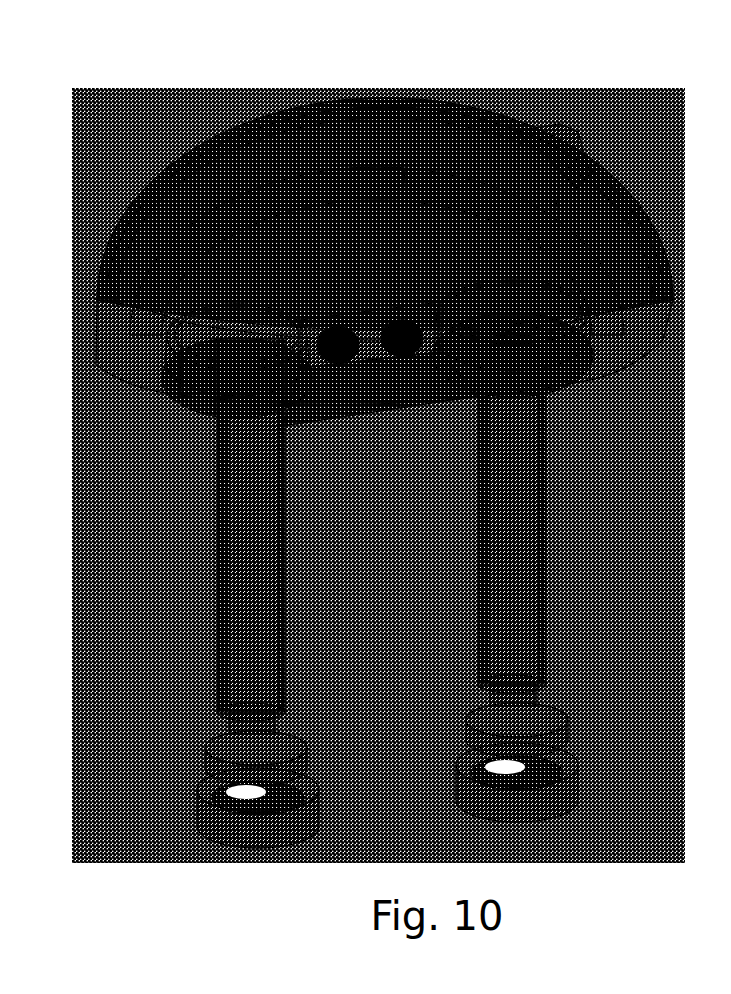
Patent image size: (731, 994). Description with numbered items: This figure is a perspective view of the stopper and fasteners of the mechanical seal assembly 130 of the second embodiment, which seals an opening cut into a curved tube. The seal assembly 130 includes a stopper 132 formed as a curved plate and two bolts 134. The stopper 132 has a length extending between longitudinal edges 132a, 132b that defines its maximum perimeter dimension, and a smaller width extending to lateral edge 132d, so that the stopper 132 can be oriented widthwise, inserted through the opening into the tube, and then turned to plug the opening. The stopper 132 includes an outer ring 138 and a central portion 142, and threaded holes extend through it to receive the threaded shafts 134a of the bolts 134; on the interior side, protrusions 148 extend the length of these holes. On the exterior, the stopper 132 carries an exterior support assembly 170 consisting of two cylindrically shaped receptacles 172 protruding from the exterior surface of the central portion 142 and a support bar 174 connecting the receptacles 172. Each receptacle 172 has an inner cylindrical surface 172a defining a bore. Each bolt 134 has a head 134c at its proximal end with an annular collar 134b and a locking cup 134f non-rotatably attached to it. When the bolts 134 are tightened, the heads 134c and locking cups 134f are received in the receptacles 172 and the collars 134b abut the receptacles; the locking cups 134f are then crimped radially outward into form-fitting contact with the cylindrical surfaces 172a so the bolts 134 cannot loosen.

The mechanical seal assembly 130 is at (67, 79).
The stopper 132 is at (379, 219).
The longitudinal edge 132a is at (97, 370).
The longitudinal edge 132b is at (686, 313).
The lateral edge 132d is at (312, 106).
The bolt 134 is at (204, 817).
The threaded shaft 134a is at (242, 610).
The annular collar 134b is at (208, 743).
The head 134c is at (241, 848).
The locking cup 134f is at (198, 778).
The outer ring 138 is at (140, 257).
The central portion 142 is at (250, 250).
The protrusion 148 is at (562, 143).
The exterior support assembly 170 is at (337, 390).
The receptacle 172 is at (276, 342).
The inner cylindrical surface 172a is at (202, 422).
The support bar 174 is at (383, 400).